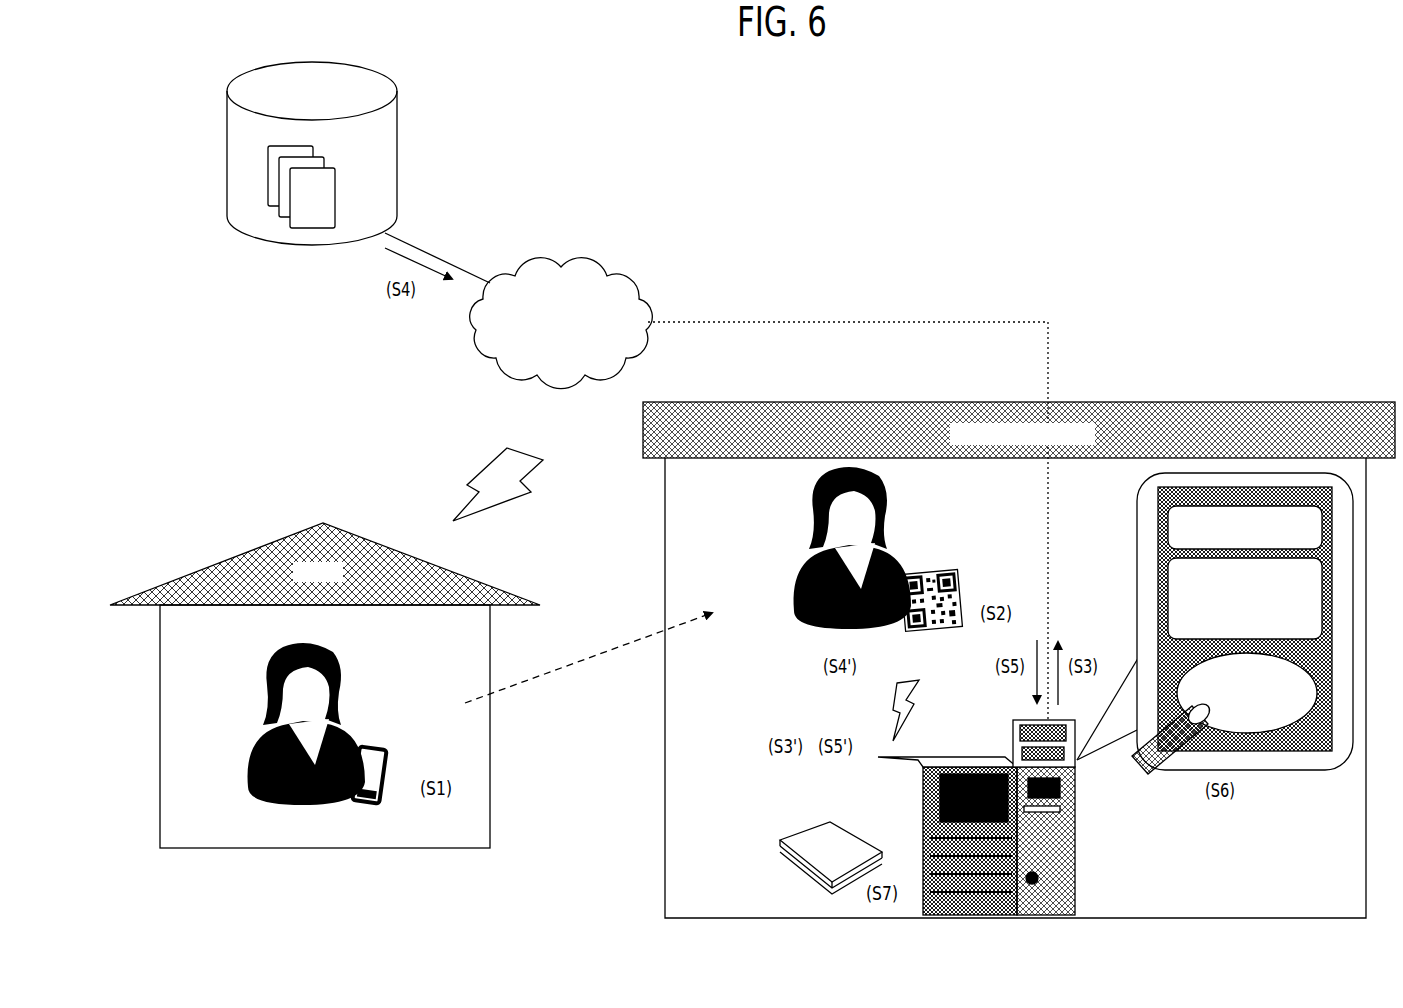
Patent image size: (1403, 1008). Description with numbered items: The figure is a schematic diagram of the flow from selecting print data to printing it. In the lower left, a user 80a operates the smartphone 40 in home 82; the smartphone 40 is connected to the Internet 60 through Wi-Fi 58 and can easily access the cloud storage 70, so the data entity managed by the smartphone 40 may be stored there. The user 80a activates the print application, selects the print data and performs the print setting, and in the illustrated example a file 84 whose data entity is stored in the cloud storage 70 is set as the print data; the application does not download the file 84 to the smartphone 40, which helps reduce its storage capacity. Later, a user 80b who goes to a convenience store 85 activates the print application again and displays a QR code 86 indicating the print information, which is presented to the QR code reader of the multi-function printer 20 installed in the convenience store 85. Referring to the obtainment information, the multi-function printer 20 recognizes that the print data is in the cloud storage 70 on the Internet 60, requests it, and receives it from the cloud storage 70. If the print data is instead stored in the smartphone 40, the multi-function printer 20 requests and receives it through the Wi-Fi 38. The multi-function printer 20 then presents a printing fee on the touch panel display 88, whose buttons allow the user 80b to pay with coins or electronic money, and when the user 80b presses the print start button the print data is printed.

The cloud storage 70 is at (228, 118).
The file 84 is at (270, 190).
The Internet 60 is at (472, 345).
The Wi-Fi 58 is at (475, 478).
The home 82 is at (230, 557).
The user 80a is at (250, 767).
The smartphone 40 is at (371, 747).
The convenience store 85 is at (1179, 400).
The user 80b is at (802, 587).
The QR code 86 is at (915, 575).
The Wi-Fi 38 is at (890, 705).
The multi-function printer 20 is at (1077, 842).
The touch panel display 88 is at (1311, 747).